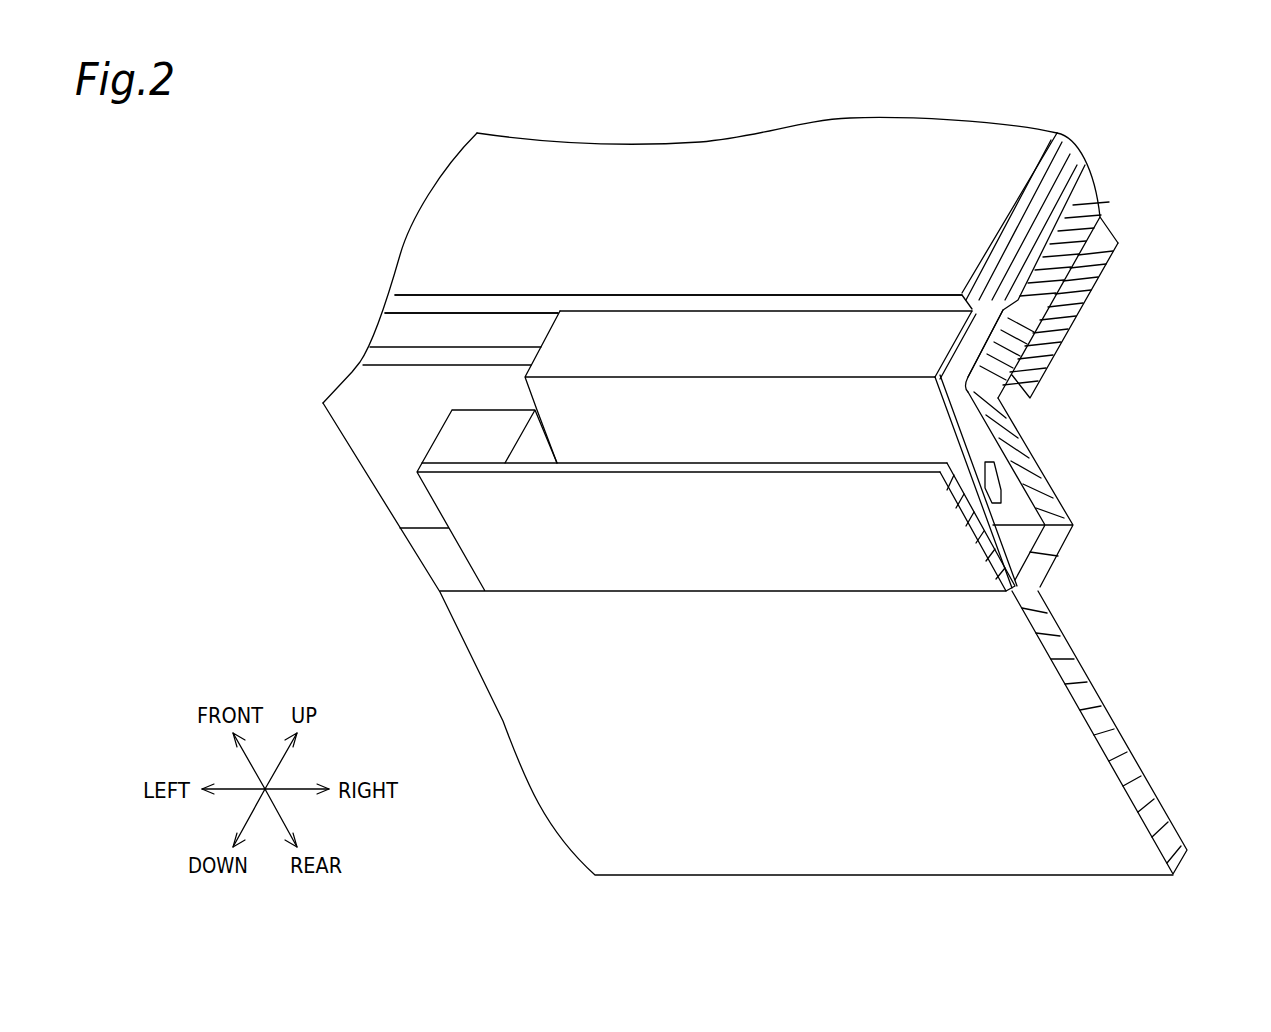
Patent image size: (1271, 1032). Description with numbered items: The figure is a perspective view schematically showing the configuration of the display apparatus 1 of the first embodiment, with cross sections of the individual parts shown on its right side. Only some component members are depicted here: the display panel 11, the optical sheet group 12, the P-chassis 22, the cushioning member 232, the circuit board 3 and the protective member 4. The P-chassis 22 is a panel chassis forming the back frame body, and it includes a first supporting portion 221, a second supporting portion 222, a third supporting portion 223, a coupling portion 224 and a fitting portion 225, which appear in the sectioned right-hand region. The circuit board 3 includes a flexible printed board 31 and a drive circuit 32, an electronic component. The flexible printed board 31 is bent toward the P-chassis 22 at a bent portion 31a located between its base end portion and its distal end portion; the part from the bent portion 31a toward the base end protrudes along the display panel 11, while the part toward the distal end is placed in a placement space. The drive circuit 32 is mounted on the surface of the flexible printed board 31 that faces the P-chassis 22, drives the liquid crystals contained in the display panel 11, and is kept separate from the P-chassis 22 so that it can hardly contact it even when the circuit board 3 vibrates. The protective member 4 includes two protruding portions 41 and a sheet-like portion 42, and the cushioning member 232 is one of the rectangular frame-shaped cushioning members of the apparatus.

The display apparatus 1 is at (286, 236).
The display panel 11 is at (966, 157).
The optical sheet group 12 is at (1087, 197).
The circuit board 3 is at (1140, 428).
The flexible printed board 31 is at (968, 443).
The bent portion 31a is at (672, 378).
The drive circuit 32 is at (990, 483).
The protective member 4 is at (283, 450).
The protruding portion 41 is at (457, 442).
The sheet-like portion 42 is at (453, 502).
The P-chassis 22 is at (1099, 653).
The first supporting portion 221 is at (1013, 412).
The second supporting portion 222 is at (1078, 300).
The third supporting portion 223 is at (372, 392).
The coupling portion 224 is at (1048, 553).
The fitting portion 225 is at (1117, 745).
The cushioning member 232 is at (1000, 372).